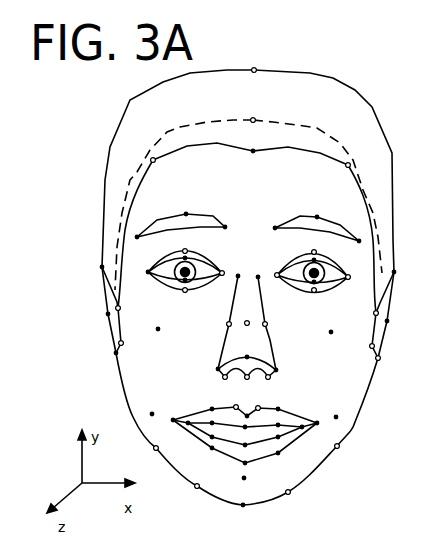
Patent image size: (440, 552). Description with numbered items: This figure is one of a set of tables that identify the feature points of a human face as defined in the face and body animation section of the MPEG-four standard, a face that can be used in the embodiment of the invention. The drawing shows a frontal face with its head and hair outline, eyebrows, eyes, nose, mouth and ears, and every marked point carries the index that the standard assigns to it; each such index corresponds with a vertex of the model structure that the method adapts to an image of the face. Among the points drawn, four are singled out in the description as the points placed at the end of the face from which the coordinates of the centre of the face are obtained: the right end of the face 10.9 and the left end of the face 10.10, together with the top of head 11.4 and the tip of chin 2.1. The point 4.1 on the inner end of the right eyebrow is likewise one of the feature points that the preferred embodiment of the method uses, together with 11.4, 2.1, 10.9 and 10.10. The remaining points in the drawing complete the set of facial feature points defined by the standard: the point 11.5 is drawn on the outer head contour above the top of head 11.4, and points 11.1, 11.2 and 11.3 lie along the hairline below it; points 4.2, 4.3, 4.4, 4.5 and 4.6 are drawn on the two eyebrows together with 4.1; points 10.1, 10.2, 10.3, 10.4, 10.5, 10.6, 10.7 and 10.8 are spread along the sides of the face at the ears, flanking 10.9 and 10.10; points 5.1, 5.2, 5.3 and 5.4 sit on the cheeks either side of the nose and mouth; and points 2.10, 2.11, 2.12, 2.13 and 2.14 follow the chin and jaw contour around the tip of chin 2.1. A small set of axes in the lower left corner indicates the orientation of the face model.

The top of head feature point 11.5 is at (255, 59).
The top of head 11.4 is at (255, 109).
The hairline center feature point 11.1 is at (253, 163).
The left hairline feature point 11.2 is at (172, 169).
The right hairline feature point 11.3 is at (329, 171).
The left eyebrow outer feature point 4.6 is at (138, 225).
The left eyebrow top feature point 4.4 is at (182, 205).
The left eyebrow inner feature point 4.2 is at (229, 215).
The feature point 4.1 is at (267, 217).
The right eyebrow top feature point 4.3 is at (313, 208).
The right eyebrow outer feature point 4.5 is at (358, 229).
The left ear top feature point 10.2 is at (83, 259).
The left end of the face 10.10 is at (141, 307).
The left ear middle feature point 10.4 is at (88, 321).
The left ear inner lower feature point 10.8 is at (138, 349).
The left ear bottom feature point 10.6 is at (99, 361).
The right ear top feature point 10.1 is at (411, 267).
The right end of the face 10.9 is at (356, 307).
The right ear middle feature point 10.3 is at (405, 327).
The right ear inner lower feature point 10.7 is at (354, 353).
The right ear bottom feature point 10.5 is at (396, 366).
The left cheek feature point 5.4 is at (173, 330).
The right cheek feature point 5.3 is at (315, 332).
The left lower cheek feature point 5.2 is at (152, 402).
The right lower cheek feature point 5.1 is at (332, 405).
The left jaw feature point 2.14 is at (136, 452).
The left chin feature point 2.12 is at (179, 496).
The tip of chin 2.1 is at (243, 515).
The chin center feature point 2.10 is at (262, 480).
The right chin feature point 2.11 is at (307, 500).
The right jaw feature point 2.13 is at (357, 454).